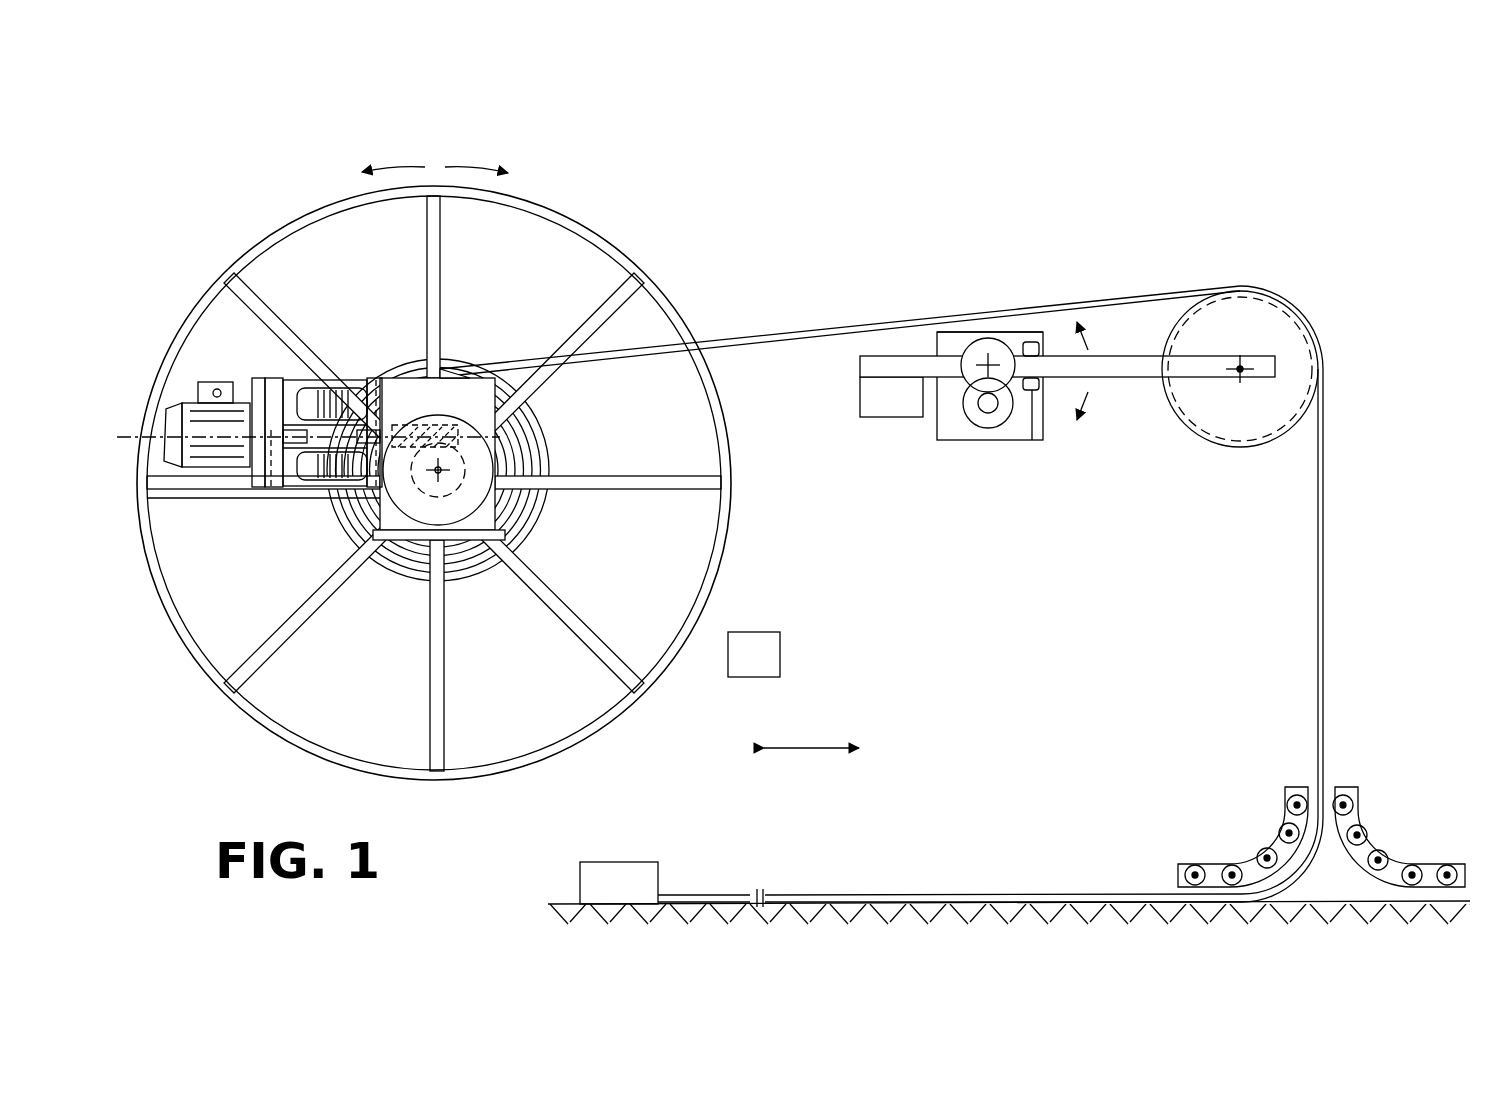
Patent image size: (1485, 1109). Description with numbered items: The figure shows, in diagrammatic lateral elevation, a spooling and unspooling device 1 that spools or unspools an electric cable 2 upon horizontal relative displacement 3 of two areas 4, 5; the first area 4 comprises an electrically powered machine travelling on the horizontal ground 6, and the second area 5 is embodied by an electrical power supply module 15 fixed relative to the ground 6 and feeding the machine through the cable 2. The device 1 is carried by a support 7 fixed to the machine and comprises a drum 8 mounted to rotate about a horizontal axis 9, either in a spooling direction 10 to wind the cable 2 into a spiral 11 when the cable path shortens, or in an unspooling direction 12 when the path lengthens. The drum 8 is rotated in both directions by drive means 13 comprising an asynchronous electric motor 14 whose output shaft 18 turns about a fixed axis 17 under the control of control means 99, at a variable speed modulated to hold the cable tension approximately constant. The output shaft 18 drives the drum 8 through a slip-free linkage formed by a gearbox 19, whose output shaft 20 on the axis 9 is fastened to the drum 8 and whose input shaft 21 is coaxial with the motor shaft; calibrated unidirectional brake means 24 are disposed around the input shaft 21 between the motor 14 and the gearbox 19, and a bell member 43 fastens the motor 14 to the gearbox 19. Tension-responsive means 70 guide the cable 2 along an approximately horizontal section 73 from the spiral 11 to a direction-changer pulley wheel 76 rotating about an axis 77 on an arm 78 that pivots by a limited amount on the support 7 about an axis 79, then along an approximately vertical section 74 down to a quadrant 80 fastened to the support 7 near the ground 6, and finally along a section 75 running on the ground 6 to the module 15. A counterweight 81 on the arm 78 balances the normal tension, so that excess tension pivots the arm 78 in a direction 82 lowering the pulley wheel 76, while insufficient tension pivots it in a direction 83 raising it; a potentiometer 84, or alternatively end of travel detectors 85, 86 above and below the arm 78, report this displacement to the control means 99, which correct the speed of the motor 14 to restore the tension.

The spooling and unspooling device 1 is at (228, 246).
The electric cable 2 is at (832, 322).
The relative displacement 3 is at (808, 748).
The first area 4 is at (458, 356).
The second area 5 is at (665, 880).
The ground 6 is at (1322, 901).
The support 7 is at (405, 541).
The drum 8 is at (597, 238).
The axis 9 is at (436, 478).
The spooling direction 10 is at (400, 168).
The spiral 11 is at (532, 445).
The unspooling direction 12 is at (470, 170).
The drive means 13 is at (211, 500).
The electric motor 14 is at (173, 420).
The electrical power supply module 15 is at (590, 880).
The axis 17 is at (128, 446).
The output shaft 18 is at (270, 505).
The gearbox 19 is at (407, 395).
The output shaft 20 is at (450, 442).
The input shaft 21 is at (375, 380).
The calibrated unidirectional brake means 24 is at (305, 500).
The bell member 43 is at (333, 382).
The means responsive to the tension in the cable 70 is at (1018, 441).
The approximately horizontal section 73 is at (948, 330).
The approximately vertical section 74 is at (1328, 600).
The section running along the ground 75 is at (978, 893).
The direction-changer pulley wheel 76 is at (1225, 422).
The axis 77 is at (1272, 300).
The arm 78 is at (1145, 378).
The axis 79 is at (990, 356).
The quadrant 80 is at (1345, 790).
The counterweight 81 is at (878, 418).
The direction 82 is at (1088, 392).
The direction 83 is at (1088, 345).
The potentiometer 84 is at (975, 407).
The end of travel detector 85 is at (1031, 343).
The end of travel detector 86 is at (1032, 440).
The control means 99 is at (776, 660).